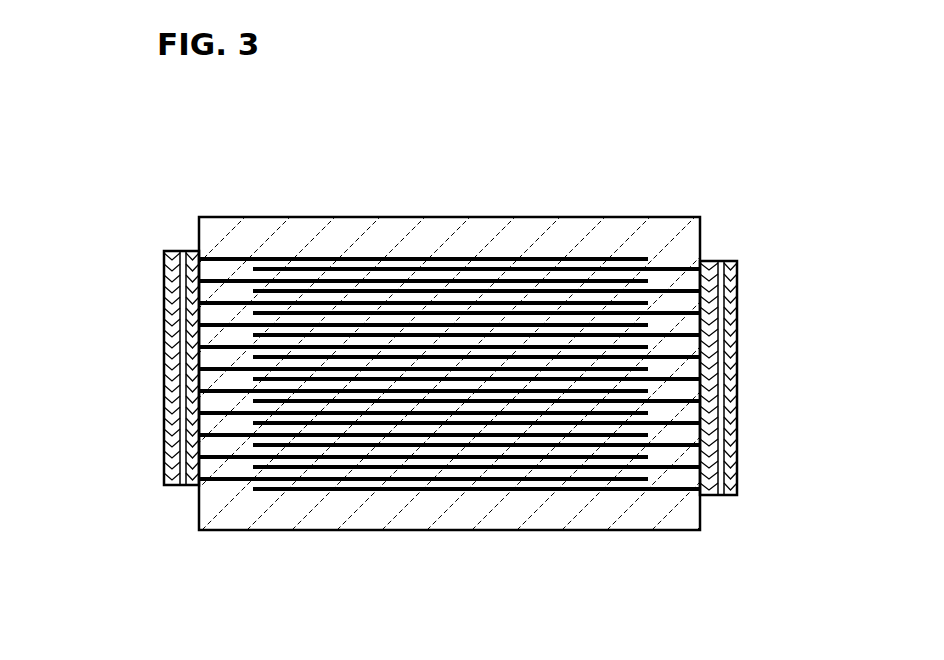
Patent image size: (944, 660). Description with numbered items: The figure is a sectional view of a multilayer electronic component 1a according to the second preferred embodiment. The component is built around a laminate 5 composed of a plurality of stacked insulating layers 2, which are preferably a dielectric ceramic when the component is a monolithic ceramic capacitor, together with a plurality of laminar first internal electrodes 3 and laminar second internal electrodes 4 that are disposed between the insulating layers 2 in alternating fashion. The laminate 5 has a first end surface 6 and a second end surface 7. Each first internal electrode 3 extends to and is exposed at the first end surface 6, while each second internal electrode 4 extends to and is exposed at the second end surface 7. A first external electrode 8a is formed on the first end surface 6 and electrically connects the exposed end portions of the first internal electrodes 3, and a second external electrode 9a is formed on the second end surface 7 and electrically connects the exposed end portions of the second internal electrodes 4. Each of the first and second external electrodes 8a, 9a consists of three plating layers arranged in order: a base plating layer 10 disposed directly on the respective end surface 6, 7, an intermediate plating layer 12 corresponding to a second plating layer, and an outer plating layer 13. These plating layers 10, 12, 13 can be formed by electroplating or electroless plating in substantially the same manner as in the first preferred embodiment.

The multilayer electronic component 1a is at (158, 129).
The insulating layers 2 is at (445, 473).
The first internal electrodes 3 is at (336, 281).
The second internal electrodes 4 is at (461, 291).
The laminate 5 is at (628, 217).
The first end surface 6 is at (190, 445).
The second end surface 7 is at (703, 462).
The first external electrode 8a is at (420, 373).
The second external electrode 9a is at (796, 378).
The base plating layer 10 is at (190, 332).
The intermediate plating layer 12 is at (183, 365).
The outer plating layer 13 is at (80, 313).